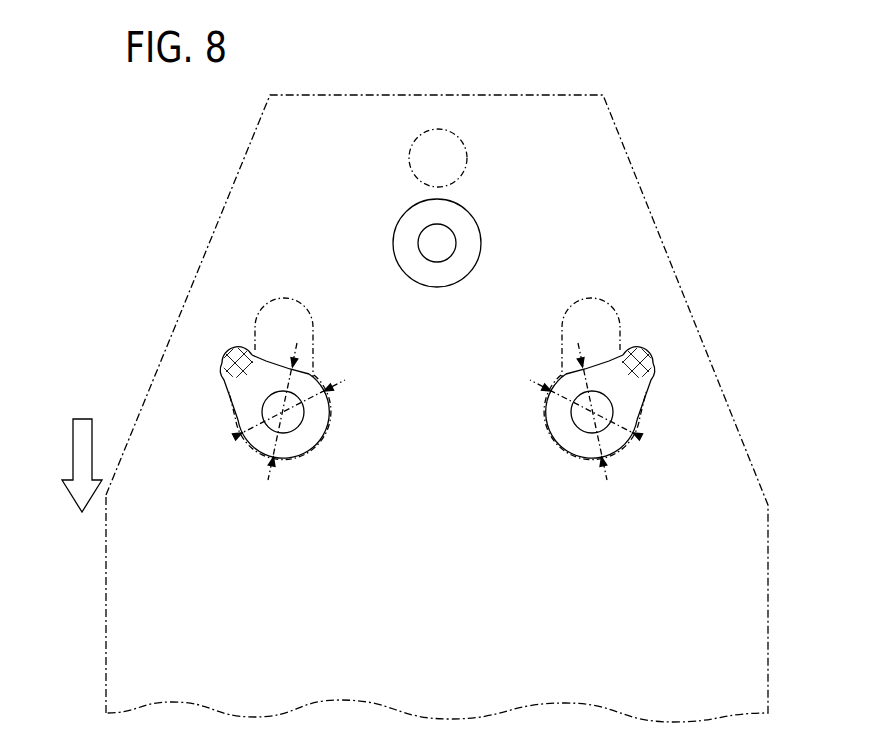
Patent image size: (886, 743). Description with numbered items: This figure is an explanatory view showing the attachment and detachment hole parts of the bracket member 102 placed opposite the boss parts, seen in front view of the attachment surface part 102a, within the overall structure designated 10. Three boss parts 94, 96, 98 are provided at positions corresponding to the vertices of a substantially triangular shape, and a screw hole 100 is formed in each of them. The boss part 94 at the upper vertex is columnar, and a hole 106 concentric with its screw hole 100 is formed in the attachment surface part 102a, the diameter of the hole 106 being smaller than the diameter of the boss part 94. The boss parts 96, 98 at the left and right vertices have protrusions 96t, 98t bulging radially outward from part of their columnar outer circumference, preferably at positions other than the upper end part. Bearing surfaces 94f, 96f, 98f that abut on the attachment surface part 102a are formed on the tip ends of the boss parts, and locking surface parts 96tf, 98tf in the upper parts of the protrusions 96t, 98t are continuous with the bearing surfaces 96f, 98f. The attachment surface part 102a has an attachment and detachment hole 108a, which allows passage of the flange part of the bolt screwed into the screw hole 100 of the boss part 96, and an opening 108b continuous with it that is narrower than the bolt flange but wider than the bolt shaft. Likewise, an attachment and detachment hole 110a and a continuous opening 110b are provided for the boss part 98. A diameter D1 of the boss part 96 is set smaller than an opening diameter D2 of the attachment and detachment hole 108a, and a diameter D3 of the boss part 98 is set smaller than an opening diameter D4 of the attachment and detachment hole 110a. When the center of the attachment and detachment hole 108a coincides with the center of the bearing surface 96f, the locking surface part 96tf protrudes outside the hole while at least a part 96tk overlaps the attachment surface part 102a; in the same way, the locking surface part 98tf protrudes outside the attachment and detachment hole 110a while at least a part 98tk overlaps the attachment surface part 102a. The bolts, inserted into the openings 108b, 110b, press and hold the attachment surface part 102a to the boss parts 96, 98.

The vehicle door lock device 10 is at (165, 140).
The boss part 94 is at (409, 258).
The bearing surface 94f is at (438, 277).
The boss part 96 is at (230, 410).
The bearing surface 96f is at (290, 443).
The protrusion 96t is at (170, 359).
The locking surface part 96tf is at (233, 360).
The overlapping part 96tk is at (223, 375).
The boss part 98 is at (643, 410).
The bearing surface 98f is at (585, 443).
The protrusion 98t is at (703, 359).
The locking surface part 98tf is at (642, 360).
The overlapping part 98tk is at (652, 375).
The screw hole 100 is at (428, 242).
The bracket member 102 is at (401, 408).
The attachment surface part 102a is at (120, 587).
The hole 106 is at (466, 150).
The attachment and detachment hole 108a is at (328, 436).
The opening 108b is at (274, 297).
The attachment and detachment hole 110a is at (548, 432).
The opening 110b is at (601, 297).
The diameter of boss part D1 is at (268, 482).
The opening diameter of attachment and detachment hole D2 is at (372, 382).
The diameter of boss part D3 is at (640, 482).
The opening diameter of attachment and detachment hole D4 is at (529, 382).